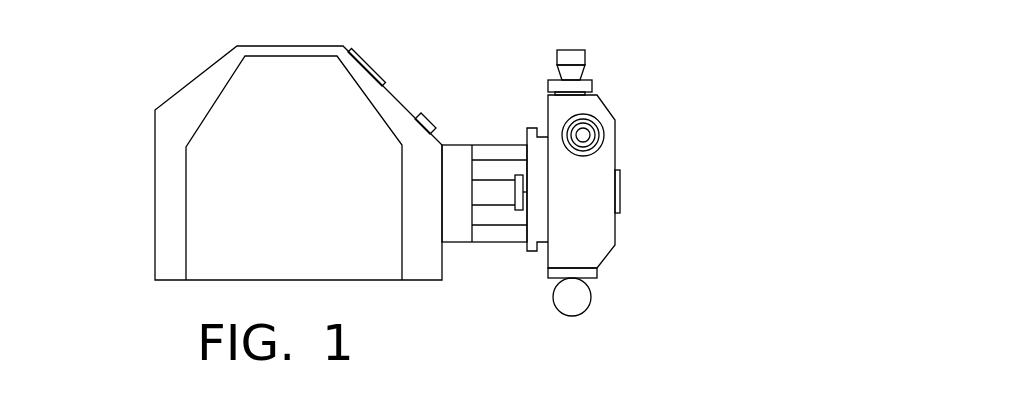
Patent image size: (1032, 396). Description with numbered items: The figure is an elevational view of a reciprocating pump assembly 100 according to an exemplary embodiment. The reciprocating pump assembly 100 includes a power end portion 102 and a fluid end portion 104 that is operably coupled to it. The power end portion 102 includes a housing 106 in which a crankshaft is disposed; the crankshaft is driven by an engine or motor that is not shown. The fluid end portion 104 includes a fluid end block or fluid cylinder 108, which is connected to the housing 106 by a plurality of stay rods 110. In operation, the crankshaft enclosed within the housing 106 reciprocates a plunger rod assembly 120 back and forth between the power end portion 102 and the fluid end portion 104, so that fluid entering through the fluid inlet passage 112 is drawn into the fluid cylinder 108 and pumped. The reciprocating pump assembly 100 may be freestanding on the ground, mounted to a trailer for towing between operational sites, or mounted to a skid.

The reciprocating pump assembly 100 is at (623, 93).
The power end portion 102 is at (155, 193).
The fluid end portion 104 is at (623, 220).
The housing 106 is at (210, 65).
The fluid cylinder 108 is at (547, 115).
The stay rods 110 is at (503, 145).
The fluid inlet passage 112 is at (580, 316).
The plunger rod assembly 120 is at (497, 207).